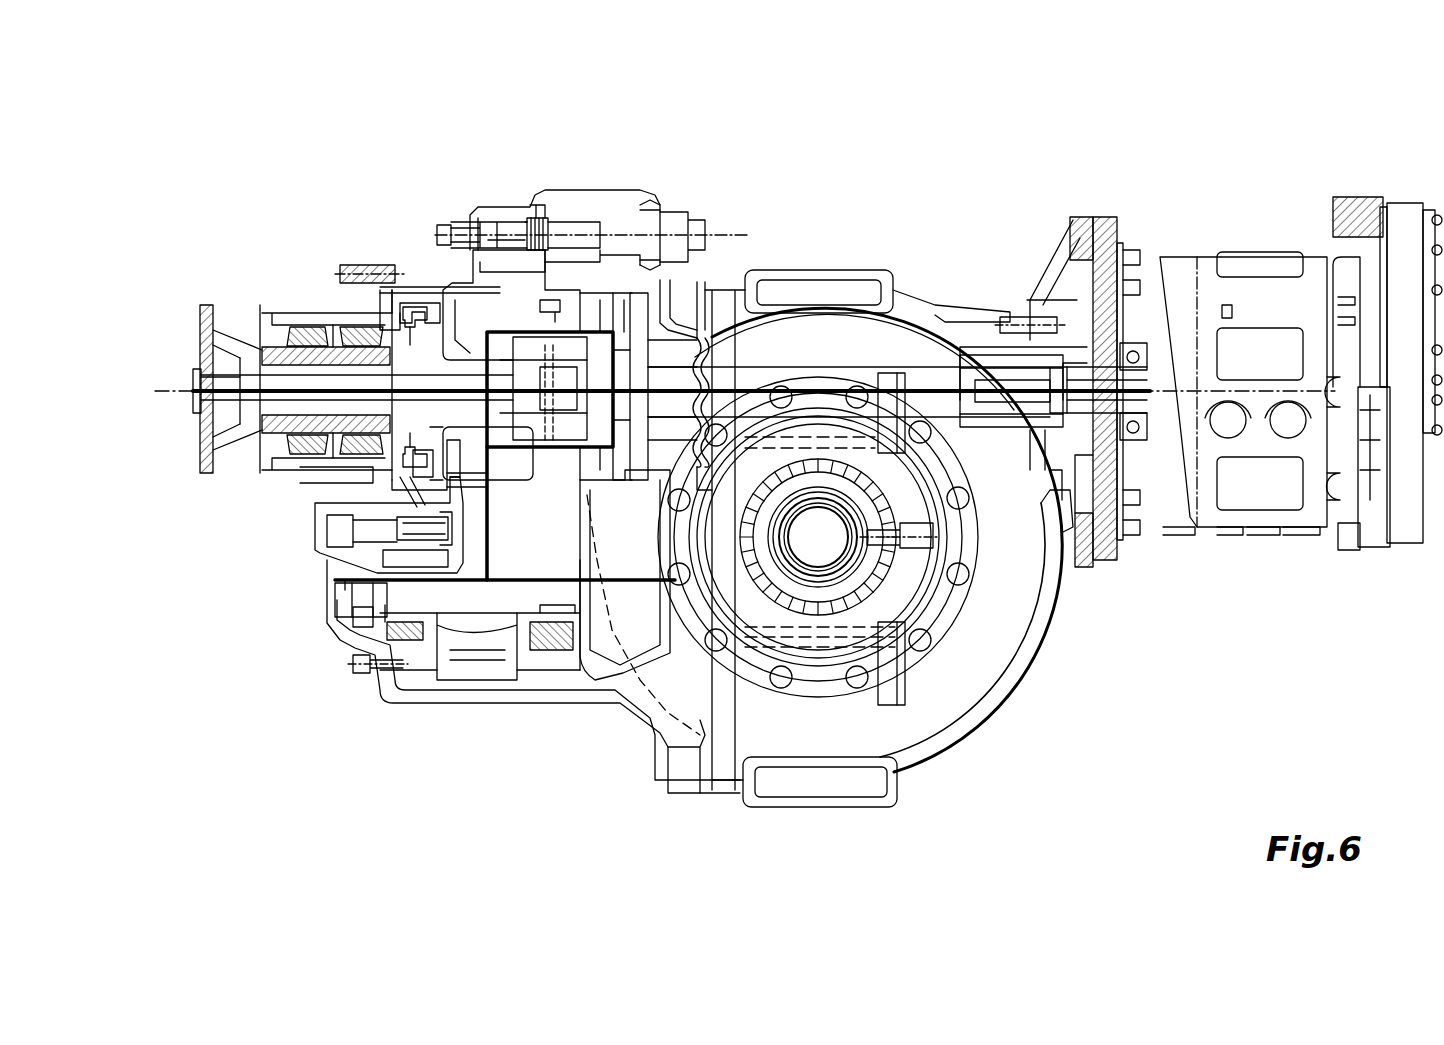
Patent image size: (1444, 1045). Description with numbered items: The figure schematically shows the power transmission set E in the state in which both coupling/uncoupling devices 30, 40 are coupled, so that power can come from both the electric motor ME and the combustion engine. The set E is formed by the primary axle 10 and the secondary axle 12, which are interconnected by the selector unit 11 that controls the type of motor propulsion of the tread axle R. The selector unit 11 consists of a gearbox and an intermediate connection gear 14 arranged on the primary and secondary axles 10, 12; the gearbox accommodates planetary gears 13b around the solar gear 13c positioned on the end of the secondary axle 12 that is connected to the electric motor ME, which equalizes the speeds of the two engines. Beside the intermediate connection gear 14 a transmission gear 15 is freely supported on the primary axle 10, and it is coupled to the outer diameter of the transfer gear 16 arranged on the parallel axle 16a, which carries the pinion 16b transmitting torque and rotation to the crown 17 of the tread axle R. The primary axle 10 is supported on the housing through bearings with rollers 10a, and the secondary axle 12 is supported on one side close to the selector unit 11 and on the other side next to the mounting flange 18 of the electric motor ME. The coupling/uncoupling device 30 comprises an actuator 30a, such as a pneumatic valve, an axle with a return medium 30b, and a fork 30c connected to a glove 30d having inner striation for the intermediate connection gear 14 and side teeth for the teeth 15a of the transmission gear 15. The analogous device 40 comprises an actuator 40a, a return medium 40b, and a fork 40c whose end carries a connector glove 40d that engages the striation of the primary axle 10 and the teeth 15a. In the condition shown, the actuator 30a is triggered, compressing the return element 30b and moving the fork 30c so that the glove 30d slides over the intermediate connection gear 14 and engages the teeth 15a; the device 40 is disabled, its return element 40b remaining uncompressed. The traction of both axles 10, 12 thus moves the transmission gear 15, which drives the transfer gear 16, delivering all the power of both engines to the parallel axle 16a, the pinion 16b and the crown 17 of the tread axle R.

The primary axle 10 is at (187, 390).
The bearings with rollers 10a is at (337, 343).
The selector unit 11 is at (677, 672).
The secondary axle 12 is at (1105, 395).
The planetary gears 13b is at (823, 540).
The solar gear 13c is at (633, 383).
The intermediate connection gear 14 is at (571, 340).
The transmission gear 15 is at (487, 313).
The teeth 15a is at (438, 306).
The transfer gear 16 is at (478, 653).
The parallel axle 16a is at (555, 588).
The pinion 16b is at (623, 630).
The crown 17 is at (705, 735).
The mounting flange 18 is at (1110, 543).
The coupling/uncoupling device 30 is at (740, 210).
The actuator 30a is at (683, 228).
The return medium 30b is at (538, 312).
The fork 30c is at (550, 307).
The glove 30d is at (543, 217).
The coupling/uncoupling device 40 is at (303, 580).
The actuator 40a is at (333, 527).
The return medium 40b is at (370, 548).
The fork 40c is at (400, 502).
The connector glove 40d is at (410, 457).
The power transmission set E is at (1047, 205).
The electric motor ME is at (1242, 353).
The tread axle R is at (908, 652).